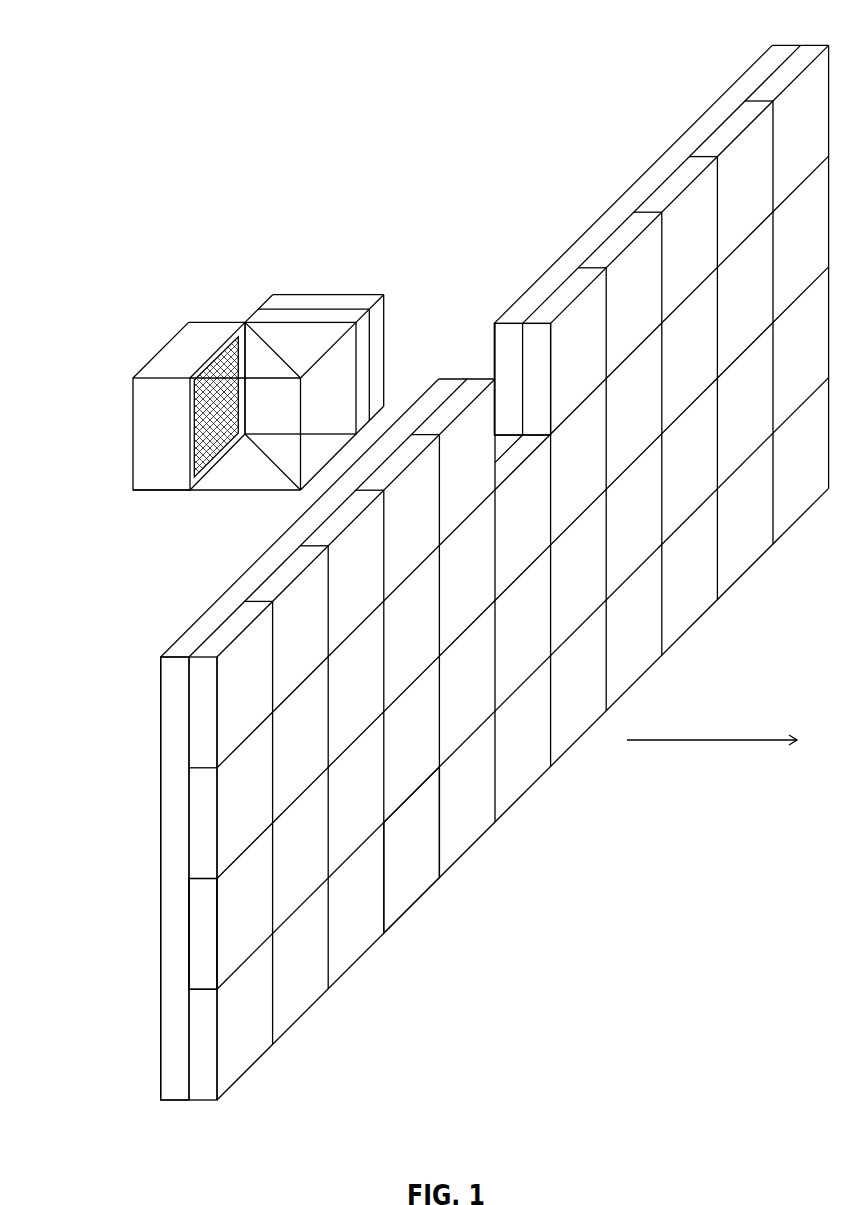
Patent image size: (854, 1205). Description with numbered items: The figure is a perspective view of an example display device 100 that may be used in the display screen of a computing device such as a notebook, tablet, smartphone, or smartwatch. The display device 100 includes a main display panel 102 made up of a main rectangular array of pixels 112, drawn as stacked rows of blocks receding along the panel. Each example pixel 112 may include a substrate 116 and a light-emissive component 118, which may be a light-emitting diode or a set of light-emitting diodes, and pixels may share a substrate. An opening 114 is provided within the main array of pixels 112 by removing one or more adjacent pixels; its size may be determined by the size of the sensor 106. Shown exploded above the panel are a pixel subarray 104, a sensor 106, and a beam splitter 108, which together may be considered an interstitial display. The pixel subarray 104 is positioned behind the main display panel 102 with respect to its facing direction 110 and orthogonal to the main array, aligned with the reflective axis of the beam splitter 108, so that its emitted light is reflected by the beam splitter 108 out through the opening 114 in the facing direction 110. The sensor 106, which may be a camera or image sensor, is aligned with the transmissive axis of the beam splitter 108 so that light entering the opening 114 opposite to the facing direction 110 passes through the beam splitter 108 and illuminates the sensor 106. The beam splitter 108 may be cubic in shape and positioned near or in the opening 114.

The display device 100 is at (295, 130).
The main display panel 102 is at (597, 828).
The pixel subarray 104 is at (303, 288).
The sensor 106 is at (203, 317).
The beam splitter 108 is at (238, 495).
The facing direction 110 is at (712, 750).
The pixel 112 is at (407, 883).
The opening 114 is at (468, 352).
The substrate 116 is at (173, 918).
The light-emissive component 118 is at (203, 968).